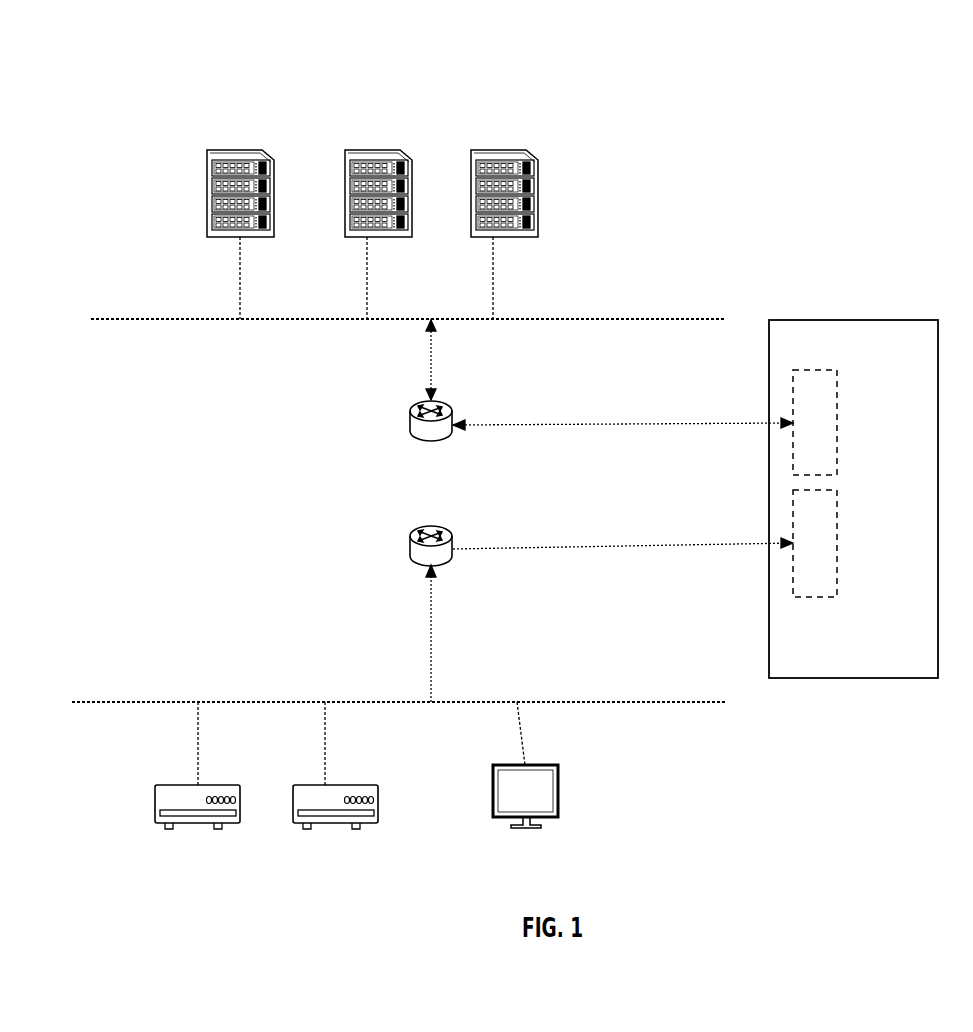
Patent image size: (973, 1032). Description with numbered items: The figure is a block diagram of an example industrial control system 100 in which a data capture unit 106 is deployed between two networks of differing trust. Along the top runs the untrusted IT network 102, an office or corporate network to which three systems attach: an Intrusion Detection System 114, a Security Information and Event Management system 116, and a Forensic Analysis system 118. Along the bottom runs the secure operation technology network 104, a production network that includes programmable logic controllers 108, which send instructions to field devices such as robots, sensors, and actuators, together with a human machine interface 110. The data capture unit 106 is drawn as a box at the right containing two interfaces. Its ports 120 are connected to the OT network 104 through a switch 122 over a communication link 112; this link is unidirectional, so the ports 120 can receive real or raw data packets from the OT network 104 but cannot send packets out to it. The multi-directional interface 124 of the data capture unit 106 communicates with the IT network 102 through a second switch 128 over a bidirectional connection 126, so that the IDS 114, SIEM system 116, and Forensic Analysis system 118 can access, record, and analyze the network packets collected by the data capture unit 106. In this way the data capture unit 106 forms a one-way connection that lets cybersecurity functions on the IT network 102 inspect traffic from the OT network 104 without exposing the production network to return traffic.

The industrial control system 100 is at (745, 64).
The IT network 102 is at (134, 319).
The OT network 104 is at (106, 702).
The data capture unit 106 is at (787, 343).
The programmable logic controller 108 is at (163, 793).
The human machine interface 110 is at (500, 772).
The communication link 112 is at (582, 548).
The Intrusion Detection System 114 is at (215, 153).
The Security Information and Event Management system 116 is at (378, 162).
The Forensic Analysis system 118 is at (517, 162).
The ports 120 is at (796, 515).
The switch 122 is at (410, 531).
The multi-directional interface 124 is at (796, 384).
The IT data link 126 is at (606, 428).
The switch 128 is at (410, 416).